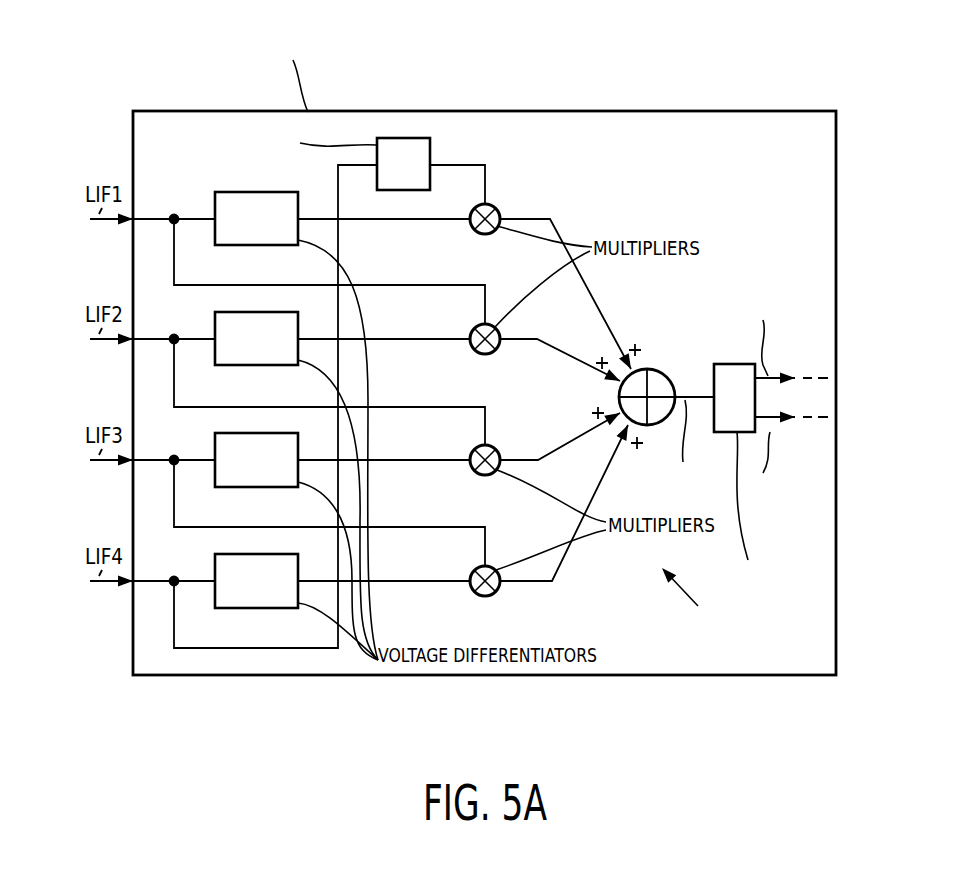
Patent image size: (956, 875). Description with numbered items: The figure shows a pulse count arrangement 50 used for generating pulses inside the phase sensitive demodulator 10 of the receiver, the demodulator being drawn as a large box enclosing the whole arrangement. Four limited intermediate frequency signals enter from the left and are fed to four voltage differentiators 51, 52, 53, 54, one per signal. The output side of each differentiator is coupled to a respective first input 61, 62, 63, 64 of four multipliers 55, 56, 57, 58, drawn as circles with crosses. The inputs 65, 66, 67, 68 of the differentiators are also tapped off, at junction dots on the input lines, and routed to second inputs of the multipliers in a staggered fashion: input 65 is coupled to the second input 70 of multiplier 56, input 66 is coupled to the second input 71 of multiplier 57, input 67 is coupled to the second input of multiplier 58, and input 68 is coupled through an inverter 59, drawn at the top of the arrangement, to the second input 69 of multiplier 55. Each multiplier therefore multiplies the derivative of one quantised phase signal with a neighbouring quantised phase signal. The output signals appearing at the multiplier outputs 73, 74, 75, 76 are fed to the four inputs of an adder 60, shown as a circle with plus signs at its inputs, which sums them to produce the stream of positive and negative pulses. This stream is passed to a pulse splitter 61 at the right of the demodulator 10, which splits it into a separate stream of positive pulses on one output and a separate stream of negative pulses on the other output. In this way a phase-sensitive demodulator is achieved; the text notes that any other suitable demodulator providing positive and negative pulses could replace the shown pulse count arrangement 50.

The phase sensitive demodulator 10 is at (665, 125).
The pulse count arrangement 50 is at (729, 636).
The voltage differentiator 51 is at (258, 192).
The voltage differentiator 52 is at (258, 312).
The voltage differentiator 53 is at (258, 433).
The voltage differentiator 54 is at (258, 554).
The multiplier 55 is at (487, 234).
The multiplier 56 is at (487, 354).
The multiplier 57 is at (487, 475).
The multiplier 58 is at (487, 596).
The inverter 59 is at (432, 146).
The adder 60 is at (657, 383).
The first input of multiplier / pulse splitter 61 is at (473, 230).
The first input of multiplier 62 is at (473, 350).
The first input of multiplier 63 is at (473, 471).
The first input of multiplier 64 is at (473, 592).
The input of voltage differentiator 65 is at (214, 218).
The input of voltage differentiator 66 is at (214, 338).
The input of voltage differentiator 67 is at (214, 459).
The input of voltage differentiator 68 is at (214, 580).
The second input of multiplier 69 is at (495, 208).
The second input of multiplier 70 is at (496, 328).
The second input of multiplier 71 is at (496, 449).
The output of multiplier 73 is at (499, 209).
The output of multiplier 74 is at (500, 334).
The output of multiplier 75 is at (500, 465).
The output of multiplier 76 is at (500, 586).